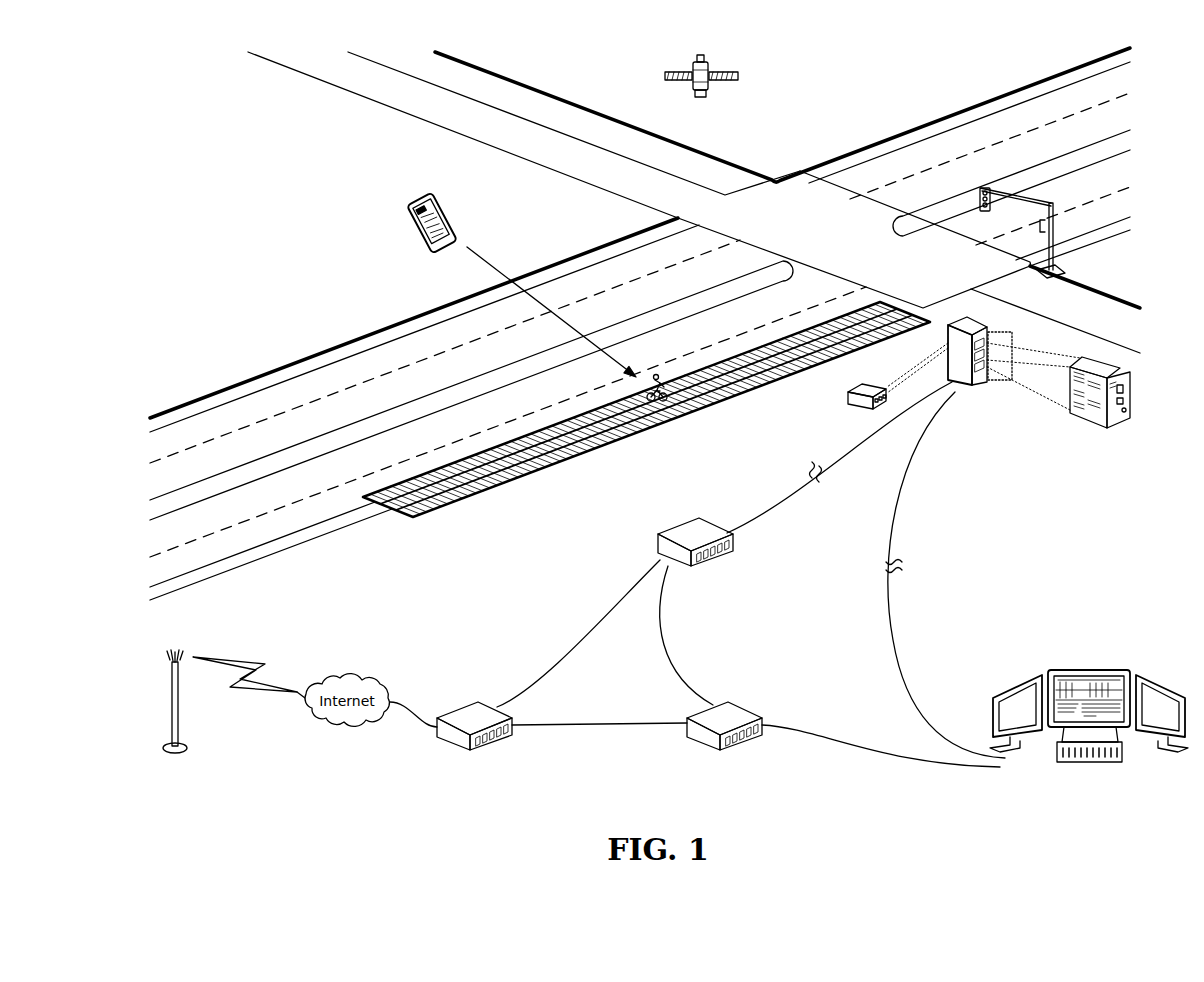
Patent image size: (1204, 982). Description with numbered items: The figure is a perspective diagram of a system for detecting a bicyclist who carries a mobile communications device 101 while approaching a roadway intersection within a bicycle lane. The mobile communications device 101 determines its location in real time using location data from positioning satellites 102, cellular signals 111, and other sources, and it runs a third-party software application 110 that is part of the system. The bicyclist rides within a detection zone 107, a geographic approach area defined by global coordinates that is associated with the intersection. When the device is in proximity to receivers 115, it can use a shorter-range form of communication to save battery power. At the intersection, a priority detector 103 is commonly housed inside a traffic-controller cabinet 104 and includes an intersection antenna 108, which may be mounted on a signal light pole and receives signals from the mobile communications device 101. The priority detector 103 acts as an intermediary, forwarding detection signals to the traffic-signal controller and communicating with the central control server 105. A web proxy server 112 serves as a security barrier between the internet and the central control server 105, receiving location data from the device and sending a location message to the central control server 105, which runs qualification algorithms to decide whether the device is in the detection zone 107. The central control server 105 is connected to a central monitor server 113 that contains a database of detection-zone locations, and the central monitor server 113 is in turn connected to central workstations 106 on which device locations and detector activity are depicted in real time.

The mobile communications device 101 is at (422, 252).
The positioning satellites 102 is at (747, 68).
The priority detector 103 is at (1097, 432).
The traffic-controller cabinet 104 is at (983, 397).
The central control server 105 is at (673, 520).
The central workstations 106 is at (1078, 660).
The detection zone 107 is at (422, 522).
The intersection antenna 108 is at (1033, 230).
The third-party software application 110 is at (443, 210).
The cellular signals 111 is at (242, 693).
The web proxy server 112 is at (475, 692).
The central monitor server 113 is at (750, 702).
The receivers 115 is at (843, 410).